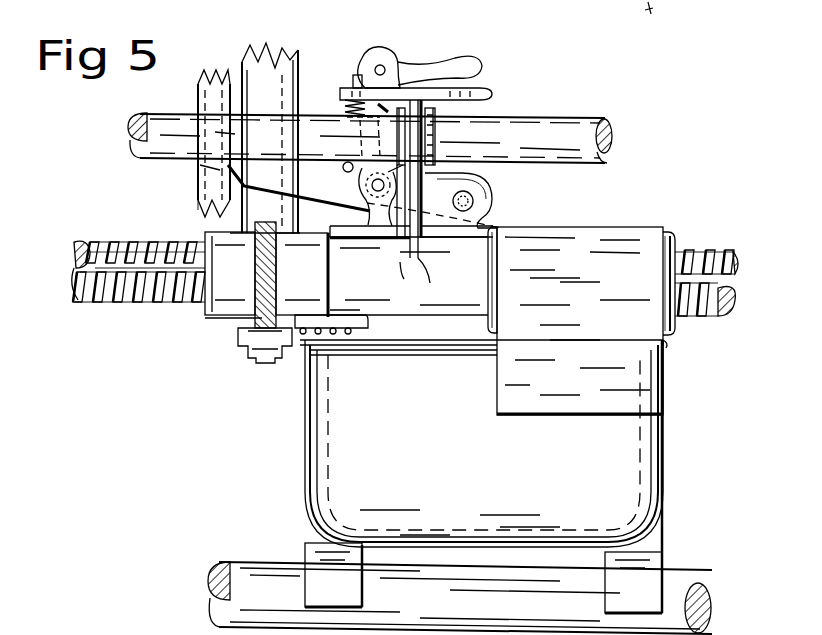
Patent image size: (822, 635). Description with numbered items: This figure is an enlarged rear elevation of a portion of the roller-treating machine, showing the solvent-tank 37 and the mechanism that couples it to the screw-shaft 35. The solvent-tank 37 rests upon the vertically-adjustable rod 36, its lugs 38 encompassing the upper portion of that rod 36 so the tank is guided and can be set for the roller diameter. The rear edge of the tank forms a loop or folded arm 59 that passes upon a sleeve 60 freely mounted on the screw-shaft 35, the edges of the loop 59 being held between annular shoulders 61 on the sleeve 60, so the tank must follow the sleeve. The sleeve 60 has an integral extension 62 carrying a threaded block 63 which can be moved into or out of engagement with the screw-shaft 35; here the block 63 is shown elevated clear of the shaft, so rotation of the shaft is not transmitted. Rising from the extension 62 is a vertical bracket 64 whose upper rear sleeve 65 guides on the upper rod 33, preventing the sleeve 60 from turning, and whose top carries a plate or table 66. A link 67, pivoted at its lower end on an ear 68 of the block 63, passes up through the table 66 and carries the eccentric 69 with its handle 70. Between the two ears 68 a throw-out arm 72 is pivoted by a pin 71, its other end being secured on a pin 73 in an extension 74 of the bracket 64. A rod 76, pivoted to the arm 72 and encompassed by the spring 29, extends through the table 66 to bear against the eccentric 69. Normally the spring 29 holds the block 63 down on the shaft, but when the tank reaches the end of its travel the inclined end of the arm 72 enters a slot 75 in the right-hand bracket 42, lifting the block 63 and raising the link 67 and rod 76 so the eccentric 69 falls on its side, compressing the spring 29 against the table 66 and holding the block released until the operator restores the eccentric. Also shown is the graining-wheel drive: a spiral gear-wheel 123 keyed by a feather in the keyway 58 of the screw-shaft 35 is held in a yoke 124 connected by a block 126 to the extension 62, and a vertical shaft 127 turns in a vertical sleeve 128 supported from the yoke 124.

The vertical sleeve 128 is at (250, 62).
The right-hand bracket 42 is at (205, 96).
The slot 75 is at (200, 166).
The throw-out arm 72 is at (364, 196).
The upper rod 33 is at (606, 120).
The eccentric 69 is at (390, 62).
The link 67 is at (383, 104).
The handle 70 is at (468, 70).
The plate or table 66 is at (492, 93).
The rod 76 is at (353, 80).
The spring 29 is at (345, 105).
The sleeve 65 is at (437, 133).
The extension 74 is at (487, 182).
The pin 73 is at (473, 201).
The pin 71 is at (372, 185).
The ears 68 is at (368, 183).
The threaded block 63 is at (336, 228).
The vertical bracket 64 is at (422, 245).
The extension 62 is at (408, 275).
The annular shoulders 61 is at (490, 272).
The sleeve 60 is at (686, 258).
The loop or folded arm 59 is at (580, 321).
The keyway 58 is at (86, 266).
The screw-shaft 35 is at (98, 244).
The spiral gear-wheel 123 is at (277, 272).
The yoke 124 is at (213, 318).
The block 126 is at (368, 323).
The vertical shaft 127 is at (258, 364).
The solvent-tank 37 is at (481, 443).
The vertically-adjustable rod 36 is at (240, 566).
The lugs 38 is at (483, 476).